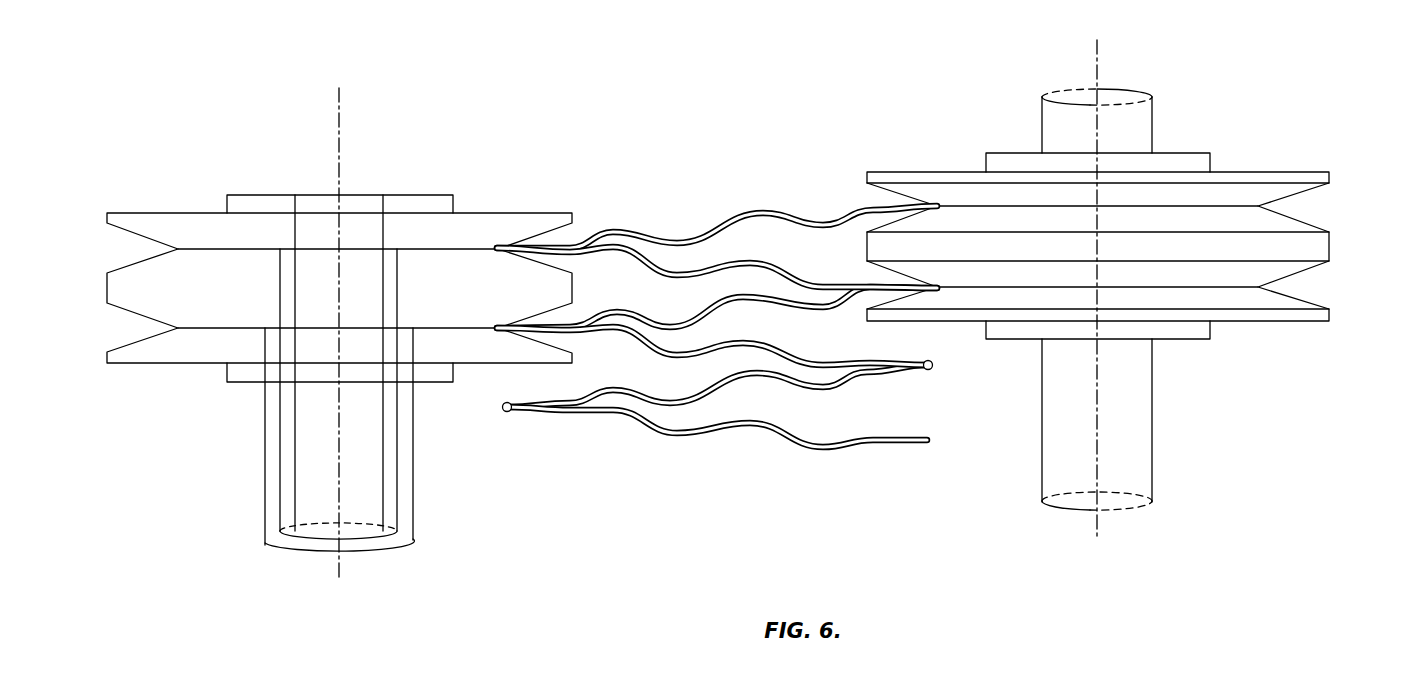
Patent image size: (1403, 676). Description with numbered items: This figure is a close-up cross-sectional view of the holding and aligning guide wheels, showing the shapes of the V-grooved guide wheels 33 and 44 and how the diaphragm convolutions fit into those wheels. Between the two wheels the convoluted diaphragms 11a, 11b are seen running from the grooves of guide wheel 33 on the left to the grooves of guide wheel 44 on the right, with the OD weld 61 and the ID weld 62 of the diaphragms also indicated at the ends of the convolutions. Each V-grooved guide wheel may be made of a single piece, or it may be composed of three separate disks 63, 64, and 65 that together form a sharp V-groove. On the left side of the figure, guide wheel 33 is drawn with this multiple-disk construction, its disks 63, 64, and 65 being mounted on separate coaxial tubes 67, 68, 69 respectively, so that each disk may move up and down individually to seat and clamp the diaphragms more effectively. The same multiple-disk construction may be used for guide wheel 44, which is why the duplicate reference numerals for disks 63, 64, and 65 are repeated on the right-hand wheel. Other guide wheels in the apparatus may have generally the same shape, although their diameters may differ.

The V-grooved guide wheel 33 is at (178, 387).
The V-grooved guide wheel 44 is at (1248, 344).
The disk 63 is at (230, 232).
The disk 64 is at (210, 290).
The disk 65 is at (177, 345).
The coaxial tube 67 is at (273, 458).
The coaxial tube 68 is at (289, 507).
The coaxial tube 69 is at (322, 517).
The OD weld 61 is at (507, 413).
The ID weld 62 is at (930, 372).
The first belt 11a is at (678, 325).
The second belt 11b is at (767, 430).